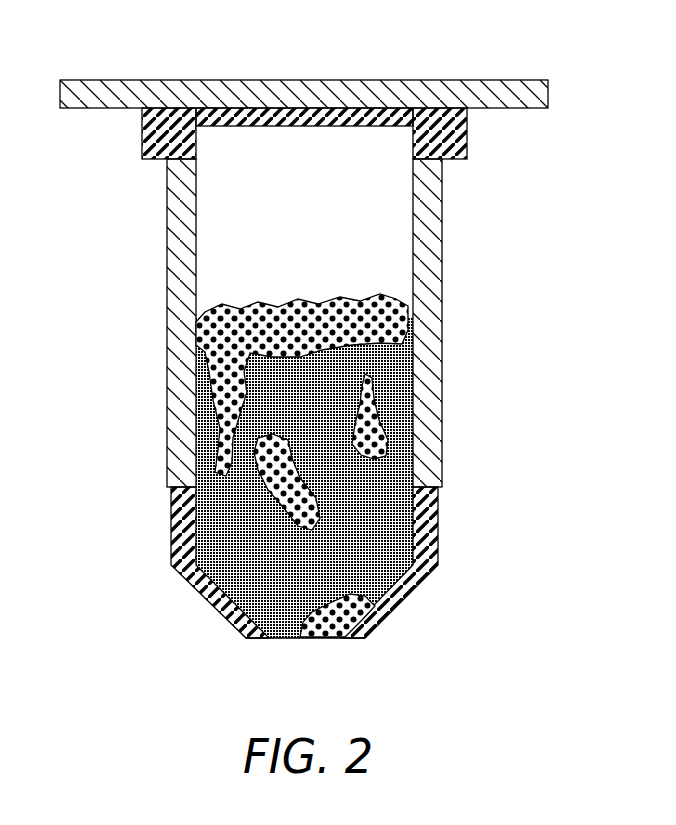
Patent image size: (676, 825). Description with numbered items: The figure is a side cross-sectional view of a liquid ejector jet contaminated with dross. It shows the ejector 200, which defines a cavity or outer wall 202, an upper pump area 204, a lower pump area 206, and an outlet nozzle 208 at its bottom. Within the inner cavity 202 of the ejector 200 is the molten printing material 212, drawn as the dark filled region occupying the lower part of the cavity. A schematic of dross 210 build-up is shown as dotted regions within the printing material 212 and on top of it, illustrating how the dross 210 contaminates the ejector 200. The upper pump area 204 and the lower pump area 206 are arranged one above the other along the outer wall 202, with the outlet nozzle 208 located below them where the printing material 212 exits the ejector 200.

The ejector 200 is at (128, 52).
The outer wall 202 is at (443, 242).
The upper pump area 204 is at (450, 350).
The lower pump area 206 is at (447, 540).
The outlet nozzle 208 is at (284, 649).
The dross 210 is at (238, 322).
The molten printing material 212 is at (245, 562).